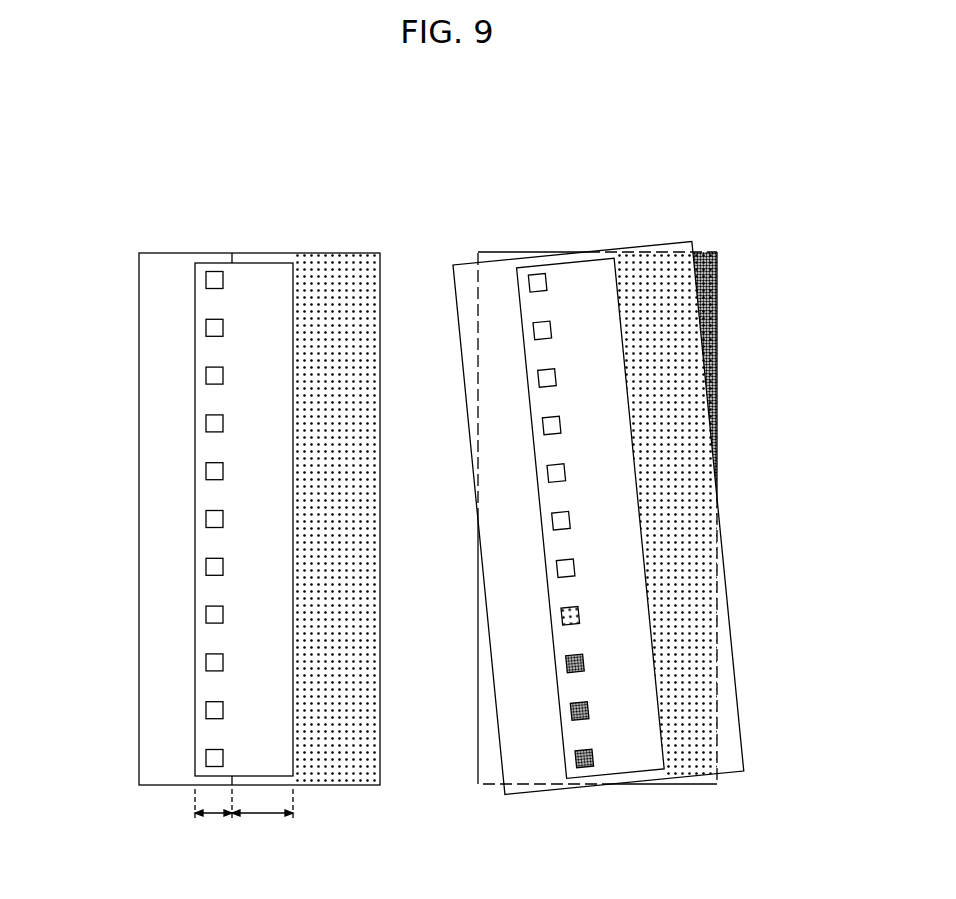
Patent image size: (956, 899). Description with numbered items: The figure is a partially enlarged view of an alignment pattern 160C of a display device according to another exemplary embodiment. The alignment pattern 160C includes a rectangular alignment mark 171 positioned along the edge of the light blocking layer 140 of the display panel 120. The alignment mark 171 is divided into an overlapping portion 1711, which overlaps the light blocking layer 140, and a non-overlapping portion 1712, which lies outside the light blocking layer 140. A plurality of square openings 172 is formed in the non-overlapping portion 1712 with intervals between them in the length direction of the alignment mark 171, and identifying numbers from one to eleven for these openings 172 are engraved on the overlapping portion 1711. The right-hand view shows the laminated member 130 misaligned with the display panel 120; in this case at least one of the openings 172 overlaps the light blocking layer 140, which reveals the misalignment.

The alignment pattern 160C is at (137, 233).
The alignment mark 171 is at (208, 688).
The openings 172 is at (206, 424).
The non-overlapping portion 1712 is at (206, 820).
The overlapping portion 1711 is at (262, 820).
The light blocking layer 140 is at (344, 768).
The display panel 120 is at (718, 246).
The laminated member 130 is at (742, 640).